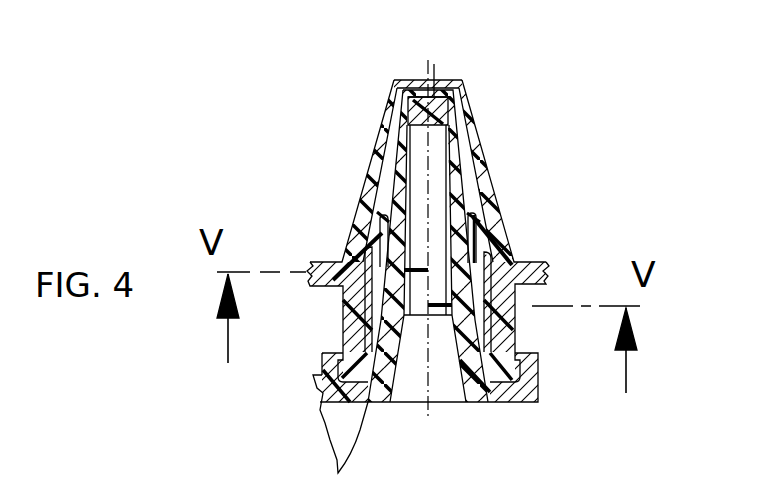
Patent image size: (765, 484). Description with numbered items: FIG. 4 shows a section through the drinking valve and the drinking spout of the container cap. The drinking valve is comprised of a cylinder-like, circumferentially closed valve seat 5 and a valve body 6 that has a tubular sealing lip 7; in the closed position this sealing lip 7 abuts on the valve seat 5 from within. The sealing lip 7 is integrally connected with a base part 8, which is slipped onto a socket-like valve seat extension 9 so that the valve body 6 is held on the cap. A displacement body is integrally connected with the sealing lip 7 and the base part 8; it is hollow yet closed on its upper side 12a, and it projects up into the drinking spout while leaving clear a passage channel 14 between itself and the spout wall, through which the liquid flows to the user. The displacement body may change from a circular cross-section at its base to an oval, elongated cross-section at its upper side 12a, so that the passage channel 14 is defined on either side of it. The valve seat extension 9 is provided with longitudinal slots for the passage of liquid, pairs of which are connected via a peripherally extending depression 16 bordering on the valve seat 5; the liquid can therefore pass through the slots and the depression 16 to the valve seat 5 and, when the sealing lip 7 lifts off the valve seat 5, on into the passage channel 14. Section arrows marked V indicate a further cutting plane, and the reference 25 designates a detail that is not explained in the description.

The vent bore 25 is at (434, 68).
The upper side of the displacement body 12a is at (430, 110).
The passage channel 14 is at (465, 180).
The valve seat 5 is at (473, 222).
The peripherally extending depression 16 is at (480, 265).
The sealing lip 7 is at (480, 262).
The valve body 6 is at (365, 253).
The valve seat extension 9 is at (498, 358).
The base part 8 is at (530, 392).